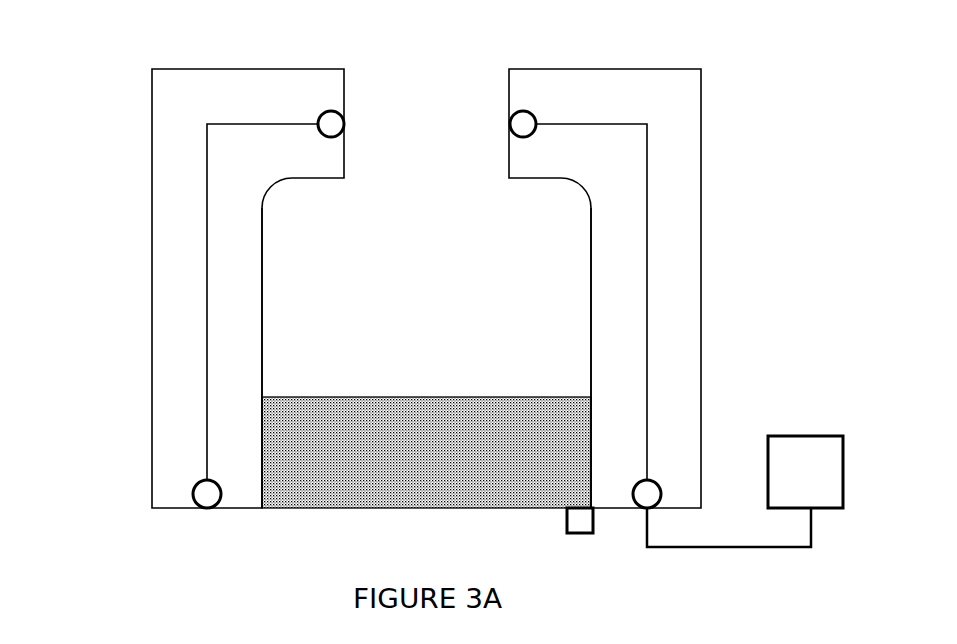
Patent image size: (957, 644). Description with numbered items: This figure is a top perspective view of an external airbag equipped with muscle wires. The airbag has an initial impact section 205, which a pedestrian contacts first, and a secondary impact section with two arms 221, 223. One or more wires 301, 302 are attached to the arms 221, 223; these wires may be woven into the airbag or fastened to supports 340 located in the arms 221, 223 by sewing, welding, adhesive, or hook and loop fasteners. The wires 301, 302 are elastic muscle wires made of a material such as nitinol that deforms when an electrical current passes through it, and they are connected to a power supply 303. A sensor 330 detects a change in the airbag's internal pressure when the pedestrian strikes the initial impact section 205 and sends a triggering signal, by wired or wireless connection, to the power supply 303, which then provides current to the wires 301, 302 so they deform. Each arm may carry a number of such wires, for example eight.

The initial impact section 205 is at (300, 483).
The arm 221 is at (152, 312).
The arm 223 is at (590, 288).
The wire 301 is at (207, 243).
The wire 302 is at (647, 243).
The power supply 303 is at (835, 412).
The sensor 330 is at (563, 540).
The support 340 is at (522, 125).